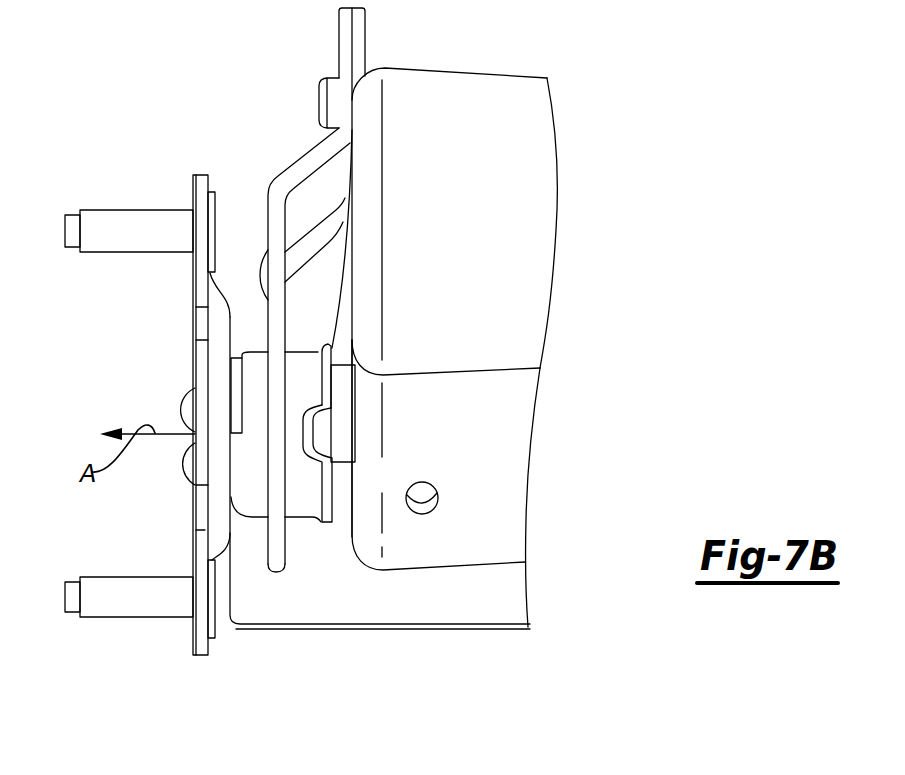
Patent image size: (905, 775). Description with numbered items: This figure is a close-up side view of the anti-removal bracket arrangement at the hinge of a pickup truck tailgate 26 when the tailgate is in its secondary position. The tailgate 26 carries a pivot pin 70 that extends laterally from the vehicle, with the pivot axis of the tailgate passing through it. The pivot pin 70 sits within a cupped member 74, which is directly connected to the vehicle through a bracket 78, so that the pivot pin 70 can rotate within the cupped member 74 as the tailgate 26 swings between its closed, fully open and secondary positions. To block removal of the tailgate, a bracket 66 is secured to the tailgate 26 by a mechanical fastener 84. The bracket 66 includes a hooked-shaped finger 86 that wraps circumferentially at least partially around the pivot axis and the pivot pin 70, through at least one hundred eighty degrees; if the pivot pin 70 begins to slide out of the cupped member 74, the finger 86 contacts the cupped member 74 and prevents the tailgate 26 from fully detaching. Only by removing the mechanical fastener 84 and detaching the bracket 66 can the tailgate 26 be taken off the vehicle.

The tailgate 26 is at (430, 605).
The bracket 66 is at (320, 187).
The pivot pin 70 is at (343, 415).
The cupped member 74 is at (322, 521).
The bracket 78 is at (205, 609).
The mechanical fastener 84 is at (323, 108).
The hooked-shaped finger 86 is at (275, 570).